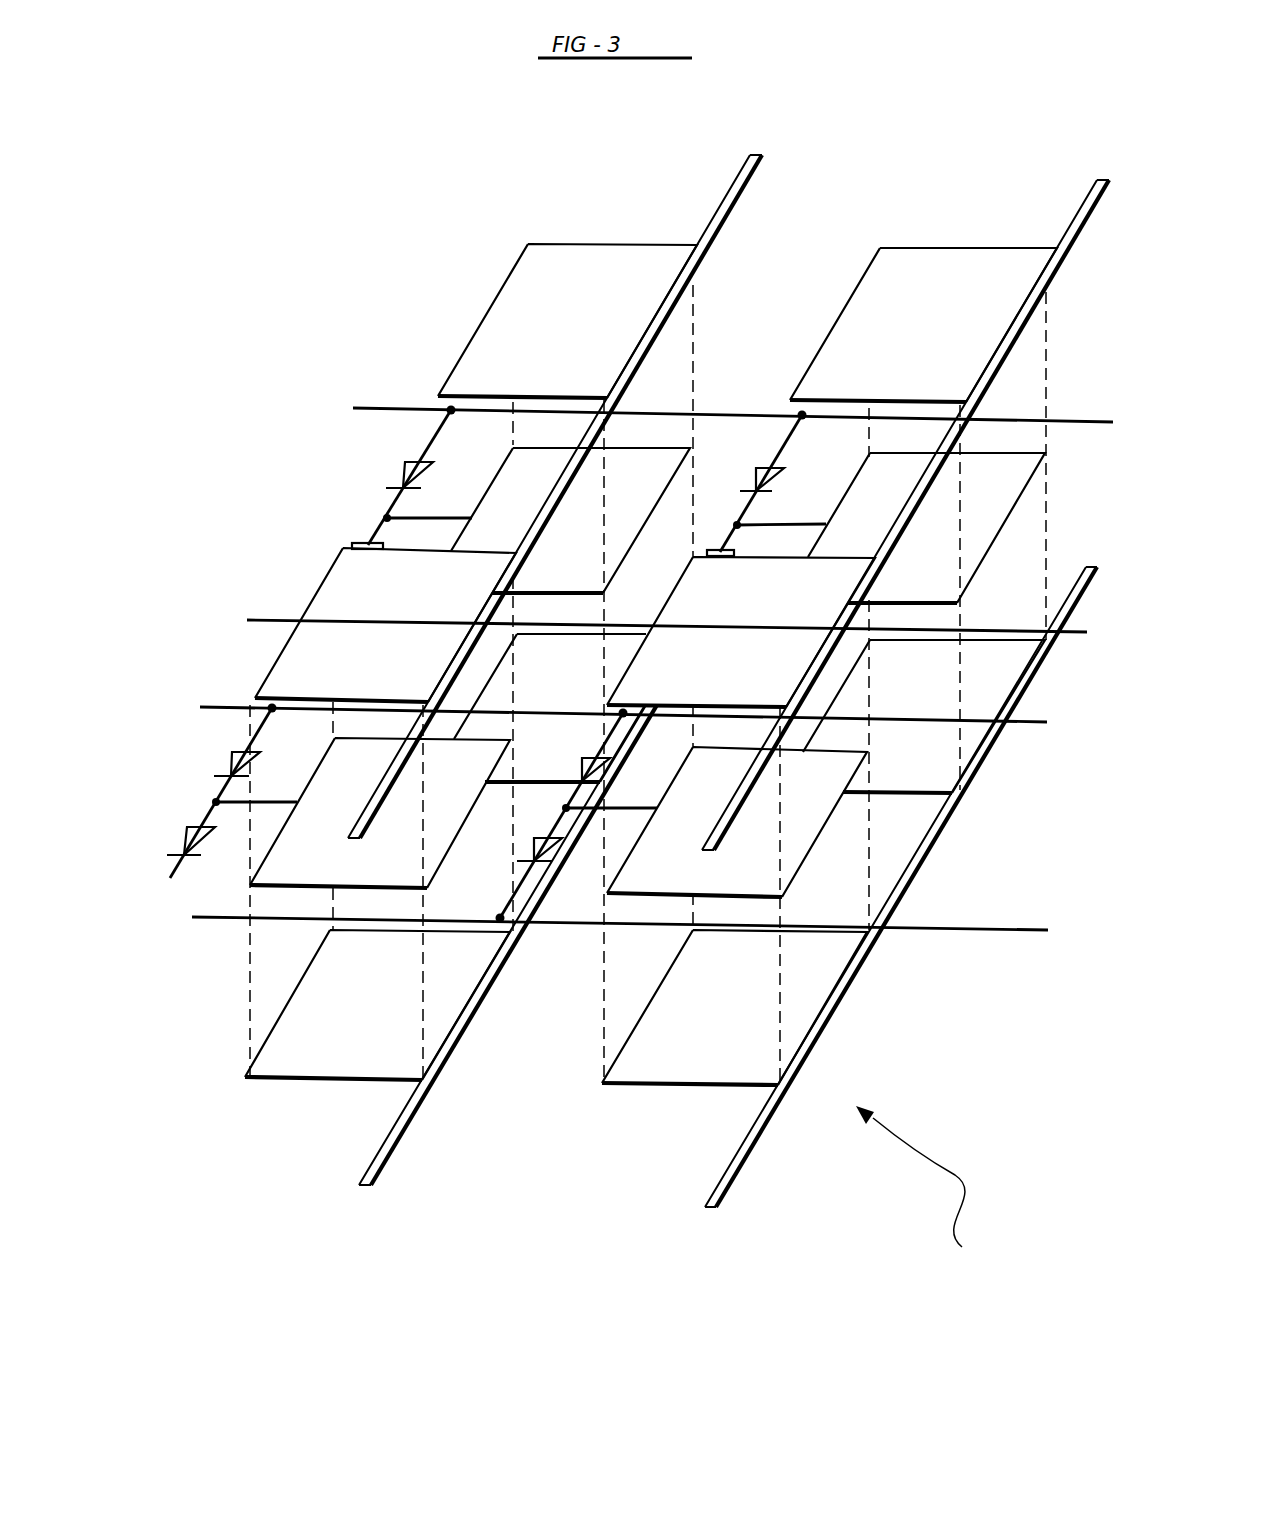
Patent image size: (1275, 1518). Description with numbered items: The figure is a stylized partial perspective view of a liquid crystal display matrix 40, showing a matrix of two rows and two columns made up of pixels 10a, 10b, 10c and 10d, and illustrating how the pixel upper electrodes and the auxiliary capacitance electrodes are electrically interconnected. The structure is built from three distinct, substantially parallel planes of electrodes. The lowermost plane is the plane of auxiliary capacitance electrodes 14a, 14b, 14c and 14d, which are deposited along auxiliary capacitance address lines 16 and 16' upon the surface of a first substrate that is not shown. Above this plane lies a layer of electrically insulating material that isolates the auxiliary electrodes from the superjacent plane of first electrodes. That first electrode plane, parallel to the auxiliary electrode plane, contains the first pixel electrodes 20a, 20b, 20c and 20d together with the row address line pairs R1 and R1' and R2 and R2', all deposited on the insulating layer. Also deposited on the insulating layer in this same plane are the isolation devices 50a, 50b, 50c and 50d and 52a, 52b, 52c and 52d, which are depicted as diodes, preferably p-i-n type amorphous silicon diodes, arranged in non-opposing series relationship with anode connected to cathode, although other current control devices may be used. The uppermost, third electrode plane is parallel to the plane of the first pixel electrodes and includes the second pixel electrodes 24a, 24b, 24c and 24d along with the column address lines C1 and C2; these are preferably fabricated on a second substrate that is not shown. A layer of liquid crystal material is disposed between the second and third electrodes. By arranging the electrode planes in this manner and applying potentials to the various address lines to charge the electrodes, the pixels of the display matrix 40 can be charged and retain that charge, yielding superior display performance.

The pixel 10a is at (592, 499).
The pixel 10b is at (945, 476).
The pixel 10c is at (365, 808).
The pixel 10d is at (749, 874).
The auxiliary capacitance electrode 14a is at (553, 819).
The auxiliary capacitance electrode 14b is at (1100, 709).
The auxiliary capacitance electrode 14c is at (318, 1110).
The auxiliary capacitance electrode 14d is at (928, 1041).
The auxiliary capacitance address line 16 is at (508, 961).
The auxiliary capacitance address line 16' is at (901, 892).
The first pixel electrode 20a is at (755, 454).
The first pixel electrode 20b is at (1032, 596).
The first pixel electrode 20c is at (489, 894).
The first pixel electrode 20d is at (852, 904).
The second pixel electrode 24a is at (640, 224).
The second pixel electrode 24b is at (980, 224).
The second pixel electrode 24c is at (301, 572).
The second pixel electrode 24d is at (665, 594).
The liquid crystal display matrix 40 is at (922, 1192).
The isolation device 50a is at (384, 445).
The isolation device 50b is at (858, 454).
The isolation device 50c is at (228, 744).
The isolation device 50d is at (686, 761).
The isolation device 52a is at (363, 502).
The isolation device 52b is at (728, 494).
The isolation device 52c is at (210, 769).
The isolation device 52d is at (595, 909).
The column address line C1 is at (748, 168).
The column address line C2 is at (1090, 200).
The row address line R1 is at (728, 397).
The row address line R1' is at (651, 617).
The row address line R2 is at (623, 701).
The row address line R2' is at (619, 909).